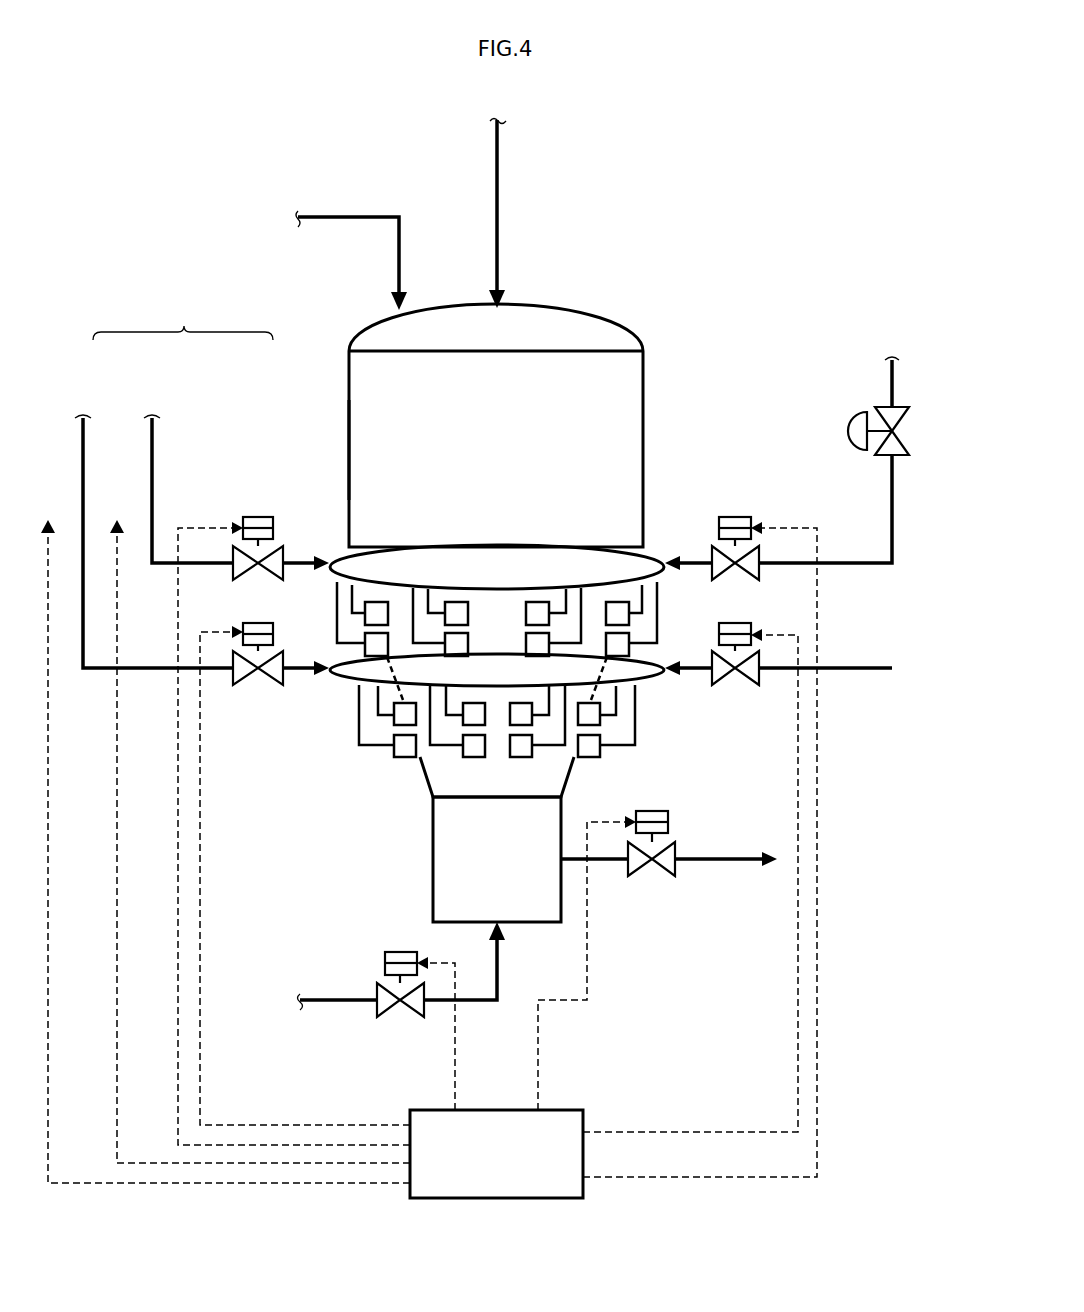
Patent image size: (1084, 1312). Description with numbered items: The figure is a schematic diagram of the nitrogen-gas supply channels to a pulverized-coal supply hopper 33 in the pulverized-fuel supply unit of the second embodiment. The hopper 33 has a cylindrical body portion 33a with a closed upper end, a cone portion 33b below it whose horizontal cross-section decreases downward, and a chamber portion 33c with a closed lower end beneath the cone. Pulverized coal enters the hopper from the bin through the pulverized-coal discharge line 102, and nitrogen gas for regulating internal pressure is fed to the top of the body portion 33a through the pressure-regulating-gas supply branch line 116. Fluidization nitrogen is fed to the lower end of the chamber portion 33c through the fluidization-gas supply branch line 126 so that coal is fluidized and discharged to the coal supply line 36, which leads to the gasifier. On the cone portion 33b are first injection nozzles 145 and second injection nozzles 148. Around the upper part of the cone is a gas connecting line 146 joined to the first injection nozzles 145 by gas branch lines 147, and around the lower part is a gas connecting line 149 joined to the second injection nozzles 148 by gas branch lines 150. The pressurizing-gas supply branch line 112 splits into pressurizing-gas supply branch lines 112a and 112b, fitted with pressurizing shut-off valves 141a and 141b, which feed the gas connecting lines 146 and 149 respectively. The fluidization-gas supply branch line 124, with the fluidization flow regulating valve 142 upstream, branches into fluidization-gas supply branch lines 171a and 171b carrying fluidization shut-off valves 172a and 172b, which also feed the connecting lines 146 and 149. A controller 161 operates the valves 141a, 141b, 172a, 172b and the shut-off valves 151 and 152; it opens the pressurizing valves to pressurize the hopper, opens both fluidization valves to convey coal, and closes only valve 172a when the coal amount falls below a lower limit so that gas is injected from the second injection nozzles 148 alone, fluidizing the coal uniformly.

The pulverized-coal supply hopper 33 is at (650, 383).
The body portion 33a is at (630, 433).
The cone portion 33b is at (429, 790).
The chamber portion 33c is at (545, 912).
The coal supply line 36 is at (729, 860).
The pulverized-coal discharge line 102 is at (497, 150).
The pressurizing-gas supply branch line 112 is at (183, 317).
The pressurizing-gas supply branch line 112a is at (165, 425).
The pressurizing-gas supply branch line 112b is at (75, 425).
The pressure-regulating-gas supply branch line 116 is at (336, 222).
The fluidization-gas supply branch line 124 is at (896, 360).
The fluidization-gas supply branch line 126 is at (332, 1003).
The pressurizing shut-off valve 141a is at (260, 517).
The pressurizing shut-off valve 141b is at (258, 679).
The fluidization flow regulating valve 142 is at (856, 410).
The first injection nozzles 145 is at (457, 612).
The gas connecting line 146 is at (657, 555).
The gas branch lines 147 is at (372, 640).
The second injection nozzles 148 is at (473, 758).
The gas connecting line 149 is at (645, 655).
The gas branch lines 150 is at (556, 693).
The shut-off valve 151 is at (668, 818).
The shut-off valve 152 is at (394, 952).
The controller 161 is at (570, 1112).
The fluidization-gas supply branch line 171a is at (842, 566).
The fluidization-gas supply branch line 171b is at (860, 670).
The fluidization shut-off valve 172a is at (740, 517).
The fluidization shut-off valve 172b is at (744, 634).